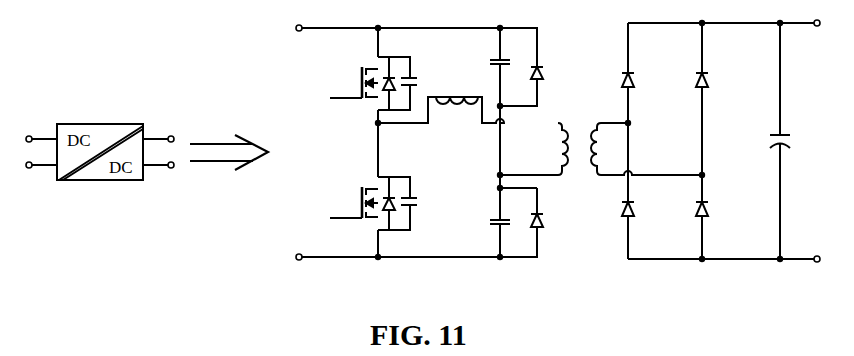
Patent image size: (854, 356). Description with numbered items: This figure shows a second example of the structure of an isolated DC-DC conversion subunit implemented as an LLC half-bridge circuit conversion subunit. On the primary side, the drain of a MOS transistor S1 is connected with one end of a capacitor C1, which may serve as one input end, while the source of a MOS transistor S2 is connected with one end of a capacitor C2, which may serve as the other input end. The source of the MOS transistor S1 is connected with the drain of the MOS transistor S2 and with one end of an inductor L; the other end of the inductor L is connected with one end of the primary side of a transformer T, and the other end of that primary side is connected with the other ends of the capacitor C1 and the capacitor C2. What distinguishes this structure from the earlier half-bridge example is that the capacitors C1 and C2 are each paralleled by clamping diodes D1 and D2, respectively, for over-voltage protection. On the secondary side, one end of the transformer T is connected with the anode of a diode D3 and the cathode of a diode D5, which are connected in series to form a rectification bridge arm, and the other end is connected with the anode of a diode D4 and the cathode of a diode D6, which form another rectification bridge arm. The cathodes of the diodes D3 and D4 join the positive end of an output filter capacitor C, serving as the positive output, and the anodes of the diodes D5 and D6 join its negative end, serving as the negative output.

The MOS transistor S1 is at (373, 83).
The MOS transistor S2 is at (373, 203).
The inductor L is at (455, 88).
The capacitor C1 is at (485, 60).
The clamping diode D1 is at (538, 67).
The capacitor C2 is at (485, 222).
The clamping diode D2 is at (538, 222).
The transformer T is at (630, 163).
The diode D3 is at (644, 73).
The diode D4 is at (723, 99).
The diode D5 is at (644, 191).
The diode D6 is at (723, 217).
The output filter capacitor C is at (793, 141).